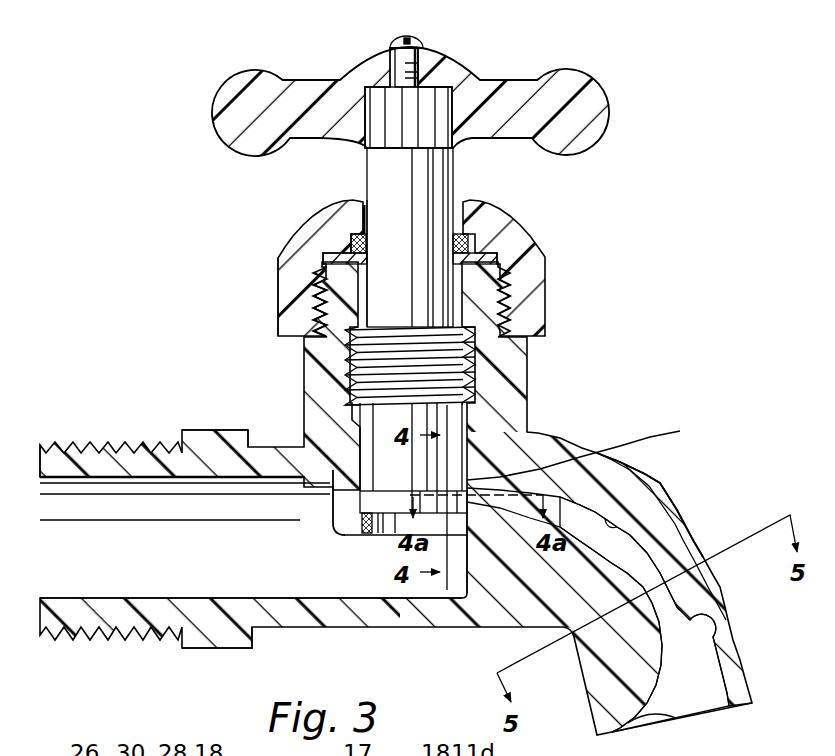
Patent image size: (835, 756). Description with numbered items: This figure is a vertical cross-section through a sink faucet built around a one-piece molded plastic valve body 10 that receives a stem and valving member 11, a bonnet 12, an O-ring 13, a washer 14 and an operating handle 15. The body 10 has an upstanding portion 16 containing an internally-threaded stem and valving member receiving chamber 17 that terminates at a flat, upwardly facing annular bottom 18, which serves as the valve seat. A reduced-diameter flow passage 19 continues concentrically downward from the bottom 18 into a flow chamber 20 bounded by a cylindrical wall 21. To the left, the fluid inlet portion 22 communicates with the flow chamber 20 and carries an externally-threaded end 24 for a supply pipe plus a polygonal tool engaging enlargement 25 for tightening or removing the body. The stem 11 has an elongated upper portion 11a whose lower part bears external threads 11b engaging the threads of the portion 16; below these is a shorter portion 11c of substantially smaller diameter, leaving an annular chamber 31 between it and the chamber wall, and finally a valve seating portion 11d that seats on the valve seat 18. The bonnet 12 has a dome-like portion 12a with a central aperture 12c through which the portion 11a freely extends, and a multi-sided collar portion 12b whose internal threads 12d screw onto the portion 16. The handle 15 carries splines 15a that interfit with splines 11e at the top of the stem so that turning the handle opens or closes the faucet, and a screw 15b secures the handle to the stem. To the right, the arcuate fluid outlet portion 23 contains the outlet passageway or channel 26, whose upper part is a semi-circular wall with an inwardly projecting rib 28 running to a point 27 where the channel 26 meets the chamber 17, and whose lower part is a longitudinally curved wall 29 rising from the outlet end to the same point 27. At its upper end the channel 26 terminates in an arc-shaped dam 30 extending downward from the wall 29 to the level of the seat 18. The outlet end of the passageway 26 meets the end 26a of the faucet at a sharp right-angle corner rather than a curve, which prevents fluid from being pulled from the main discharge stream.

The valve body 10 is at (592, 445).
The stem and valving member 11 is at (453, 186).
The elongated upper portion 11a is at (425, 283).
The external threads 11b is at (477, 355).
The shorter reduced-diameter portion 11c is at (450, 430).
The valve seating portion 11d is at (366, 520).
The splines 11e is at (423, 103).
The bonnet 12 is at (547, 295).
The upper dome-like portion 12a is at (310, 232).
The lower multi-sided collar portion 12b is at (278, 293).
The central aperture 12c is at (372, 200).
The internal threads 12d is at (323, 278).
The O-ring 13 is at (468, 230).
The washer 14 is at (492, 252).
The operating handle 15 is at (517, 78).
The handle splines 15a is at (417, 50).
The screw 15b is at (392, 38).
The upstanding portion 16 is at (527, 378).
The stem and valving member receiving chamber 17 is at (330, 418).
The annular bottom 18 is at (378, 502).
The flow passage 19 is at (378, 518).
The flow chamber 20 is at (406, 555).
The cylindrical wall 21 is at (365, 597).
The fluid inlet portion 22 is at (252, 442).
The fluid outlet portion 23 is at (565, 437).
The externally-threaded end 24 is at (97, 445).
The polygonal tool engaging enlargement 25 is at (207, 649).
The fluid outlet passageway or channel 26 is at (700, 720).
The end of the faucet 26a is at (752, 706).
The point of communication 27 is at (660, 436).
The rib 28 is at (634, 556).
The lower wall 29 is at (628, 568).
The dam 30 is at (463, 545).
The annular chamber 31 is at (313, 477).